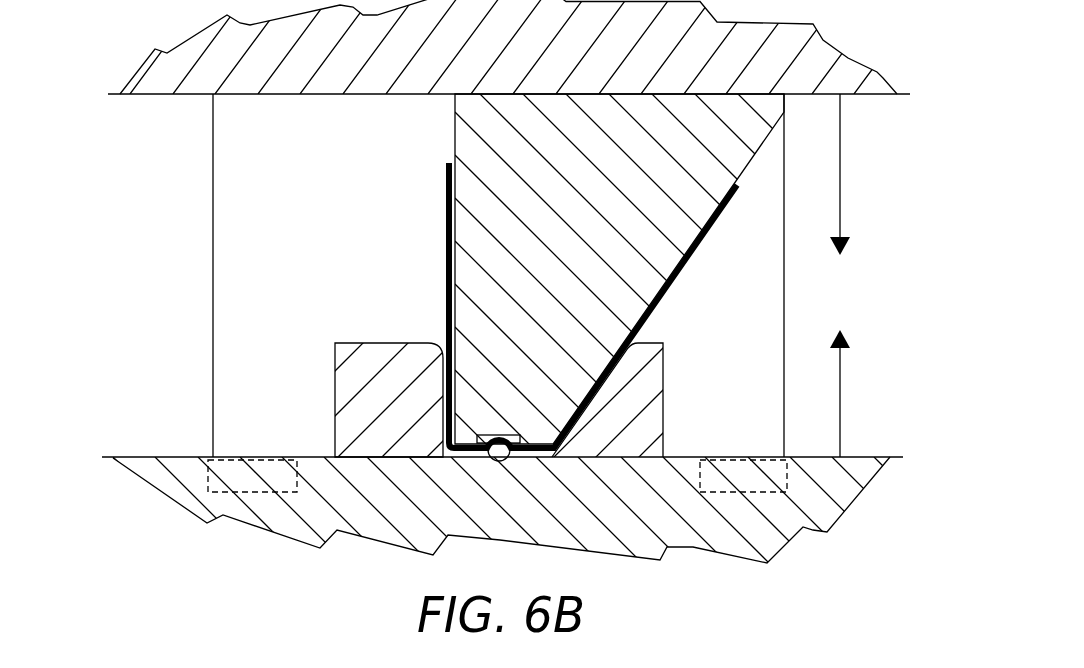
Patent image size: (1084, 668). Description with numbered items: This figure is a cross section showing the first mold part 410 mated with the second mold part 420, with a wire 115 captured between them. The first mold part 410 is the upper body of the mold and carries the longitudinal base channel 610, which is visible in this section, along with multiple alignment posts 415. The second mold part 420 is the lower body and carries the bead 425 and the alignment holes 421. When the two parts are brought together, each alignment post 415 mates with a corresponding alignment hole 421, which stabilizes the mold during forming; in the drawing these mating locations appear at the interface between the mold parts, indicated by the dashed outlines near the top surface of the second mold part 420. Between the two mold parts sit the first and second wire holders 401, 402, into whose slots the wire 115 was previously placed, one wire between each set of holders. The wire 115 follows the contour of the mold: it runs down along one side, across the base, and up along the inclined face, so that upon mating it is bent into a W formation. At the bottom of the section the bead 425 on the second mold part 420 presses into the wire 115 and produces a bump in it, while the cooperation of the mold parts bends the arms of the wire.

The first mold part 410 is at (162, 180).
The second mold part 420 is at (170, 536).
The first wire holder 401 is at (335, 343).
The second wire holder 402 is at (664, 343).
The wire 115 is at (447, 300).
The longitudinal base channel 610 is at (443, 440).
The bead 425 is at (553, 456).
The alignment post 415 is at (207, 470).
The alignment hole 421 is at (208, 478).